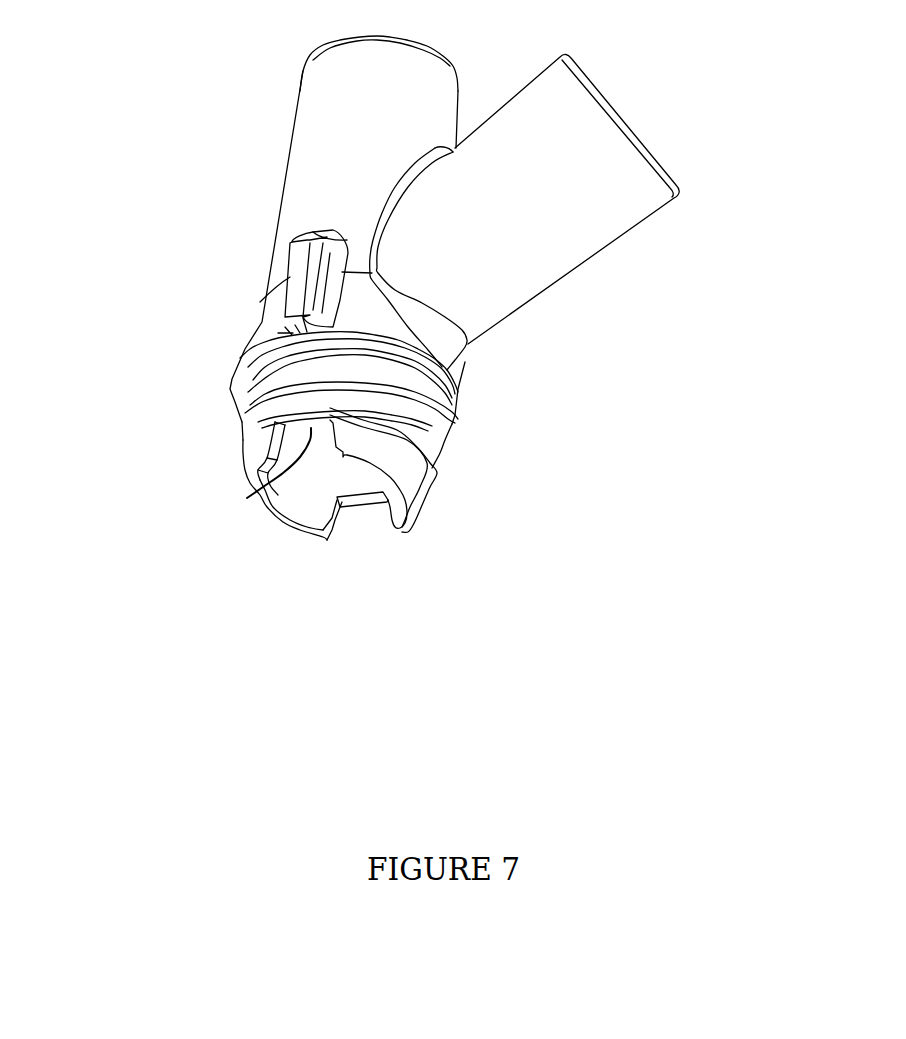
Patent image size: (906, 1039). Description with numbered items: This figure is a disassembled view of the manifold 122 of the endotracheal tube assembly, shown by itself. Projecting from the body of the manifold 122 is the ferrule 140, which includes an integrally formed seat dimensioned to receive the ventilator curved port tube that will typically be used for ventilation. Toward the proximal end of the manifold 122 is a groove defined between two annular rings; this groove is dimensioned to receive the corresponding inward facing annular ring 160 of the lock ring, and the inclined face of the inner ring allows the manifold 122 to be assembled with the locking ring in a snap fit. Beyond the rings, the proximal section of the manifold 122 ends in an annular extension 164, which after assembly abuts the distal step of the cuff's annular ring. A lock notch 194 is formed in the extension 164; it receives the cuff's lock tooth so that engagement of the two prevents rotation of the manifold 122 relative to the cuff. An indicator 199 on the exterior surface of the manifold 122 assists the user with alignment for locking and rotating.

The manifold 122 is at (235, 150).
The ferrule 140 is at (595, 227).
The indicator 199 is at (302, 275).
The inward facing annular ring 160 is at (422, 404).
The annular extension 164 is at (415, 476).
The lock notch 194 is at (247, 498).